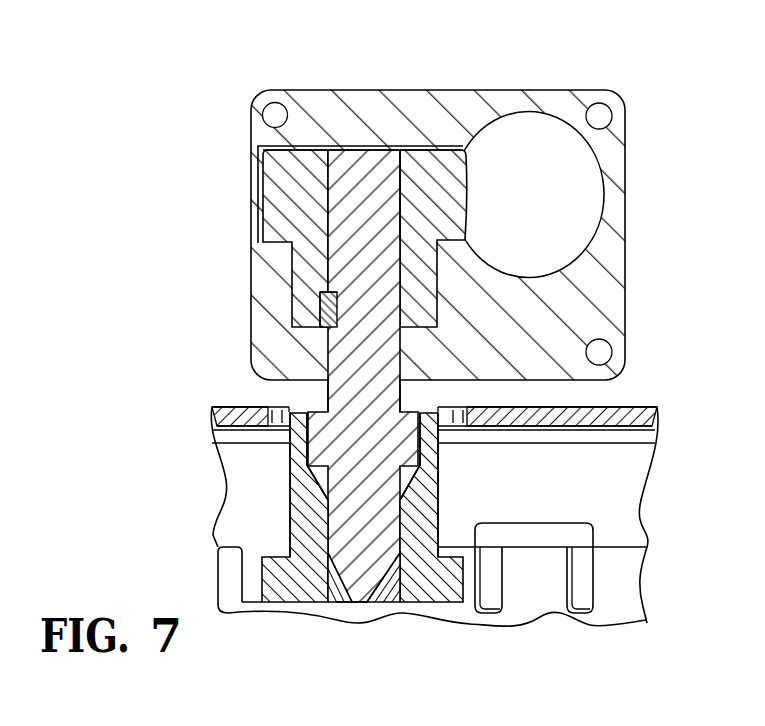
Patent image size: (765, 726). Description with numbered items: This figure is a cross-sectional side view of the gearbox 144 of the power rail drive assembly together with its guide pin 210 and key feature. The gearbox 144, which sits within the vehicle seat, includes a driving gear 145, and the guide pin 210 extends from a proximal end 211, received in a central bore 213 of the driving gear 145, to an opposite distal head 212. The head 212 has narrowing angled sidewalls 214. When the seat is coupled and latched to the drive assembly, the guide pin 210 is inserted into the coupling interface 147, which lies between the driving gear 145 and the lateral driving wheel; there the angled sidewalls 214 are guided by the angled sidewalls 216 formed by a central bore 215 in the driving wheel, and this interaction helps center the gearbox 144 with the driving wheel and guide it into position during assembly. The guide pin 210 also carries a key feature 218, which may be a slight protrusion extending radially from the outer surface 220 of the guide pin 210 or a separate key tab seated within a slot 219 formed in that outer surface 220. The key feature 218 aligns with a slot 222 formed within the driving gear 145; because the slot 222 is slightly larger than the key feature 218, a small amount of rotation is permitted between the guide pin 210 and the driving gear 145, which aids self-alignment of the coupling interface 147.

The gearbox 144 is at (210, 147).
The driving gear 145 is at (257, 228).
The coupling interface 147 is at (289, 520).
The guide pin 210 is at (355, 172).
The proximal end 211 is at (375, 150).
The distal head 212 is at (364, 605).
The central bore 213 is at (401, 187).
The angled sidewalls 214 is at (342, 581).
The central bore 215 is at (343, 596).
The angled sidewalls 216 is at (290, 488).
The key feature 218 is at (330, 312).
The slot 219 is at (329, 292).
The outer surface 220 is at (328, 388).
The slot 222 is at (317, 298).